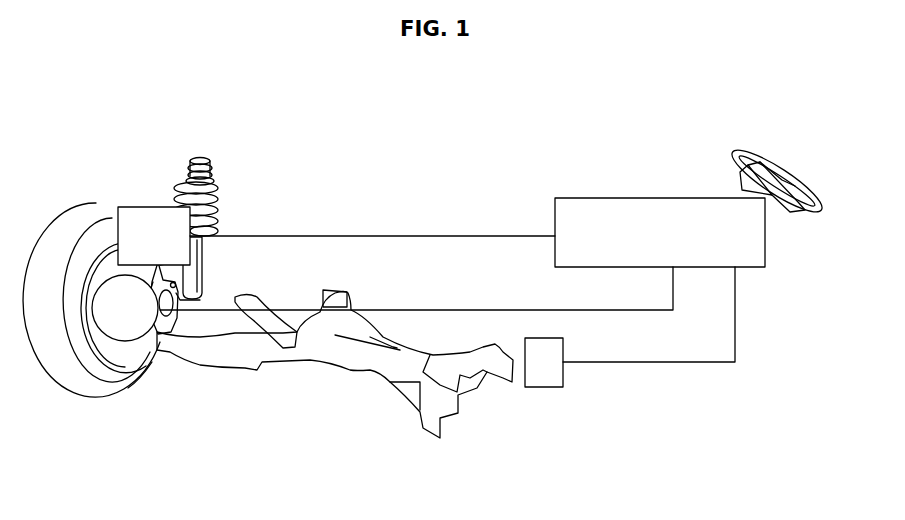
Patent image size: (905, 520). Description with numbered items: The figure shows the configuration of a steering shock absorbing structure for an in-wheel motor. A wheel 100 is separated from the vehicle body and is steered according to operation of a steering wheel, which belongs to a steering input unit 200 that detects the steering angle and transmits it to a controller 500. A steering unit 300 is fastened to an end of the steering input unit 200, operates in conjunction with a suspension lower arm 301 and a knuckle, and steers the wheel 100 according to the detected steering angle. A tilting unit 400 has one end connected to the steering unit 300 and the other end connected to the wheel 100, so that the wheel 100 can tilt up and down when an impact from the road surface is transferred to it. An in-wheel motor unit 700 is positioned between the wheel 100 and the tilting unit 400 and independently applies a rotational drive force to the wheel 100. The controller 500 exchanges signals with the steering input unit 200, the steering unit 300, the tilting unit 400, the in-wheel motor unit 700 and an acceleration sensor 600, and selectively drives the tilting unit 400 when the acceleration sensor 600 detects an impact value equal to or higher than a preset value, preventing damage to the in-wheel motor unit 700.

The wheel 100 is at (85, 218).
The steering input unit 200 is at (773, 163).
The steering unit 300 is at (150, 207).
The suspension lower arm 301 is at (230, 350).
The tilting unit 400 is at (154, 236).
The controller 500 is at (660, 197).
The acceleration sensor 600 is at (542, 387).
The in-wheel motor unit 700 is at (115, 341).